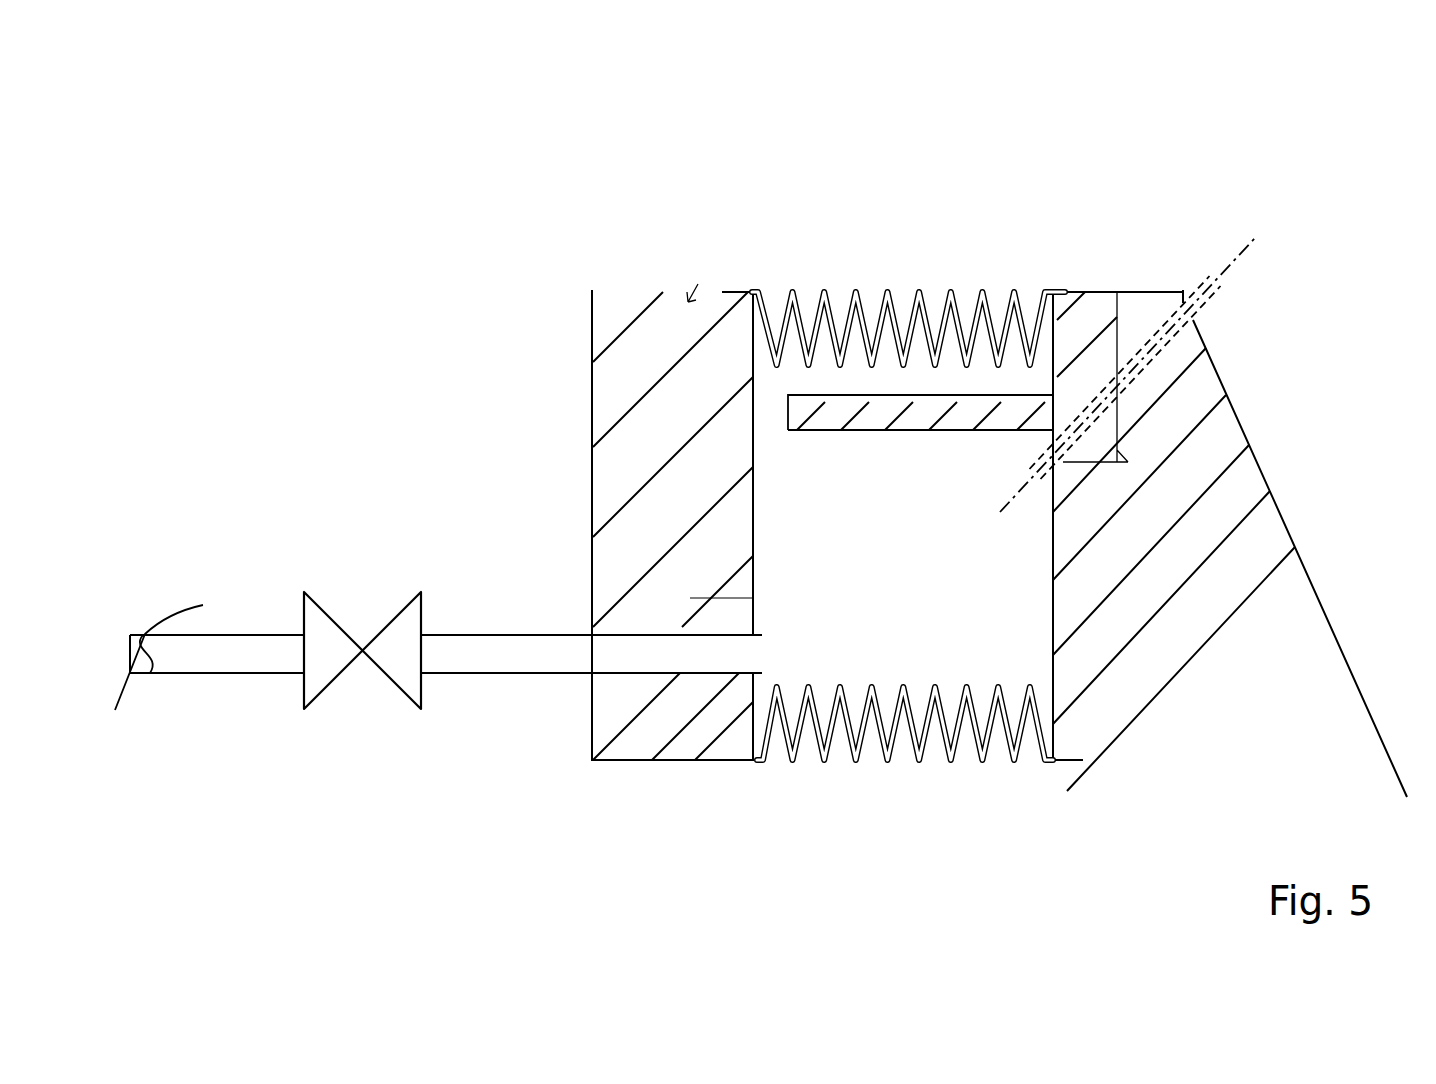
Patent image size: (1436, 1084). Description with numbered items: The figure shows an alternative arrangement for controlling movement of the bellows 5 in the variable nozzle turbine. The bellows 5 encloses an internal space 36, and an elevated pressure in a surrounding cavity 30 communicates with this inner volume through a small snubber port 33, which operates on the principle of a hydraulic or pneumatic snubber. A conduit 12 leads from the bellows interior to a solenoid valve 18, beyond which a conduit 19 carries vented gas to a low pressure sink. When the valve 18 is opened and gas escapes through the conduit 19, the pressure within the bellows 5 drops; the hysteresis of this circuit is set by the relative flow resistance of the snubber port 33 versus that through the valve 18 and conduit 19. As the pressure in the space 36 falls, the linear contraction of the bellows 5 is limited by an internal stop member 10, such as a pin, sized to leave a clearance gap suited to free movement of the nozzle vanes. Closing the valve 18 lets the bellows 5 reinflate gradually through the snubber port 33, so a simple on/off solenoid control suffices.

The bellows 5 is at (983, 288).
The internal stop member 10 is at (793, 407).
The conduit 12 is at (549, 643).
The valve 18 is at (320, 602).
The conduit 19 is at (188, 665).
The cavity 30 is at (999, 437).
The snubber port 33 is at (1195, 320).
The internal space 36 is at (925, 561).